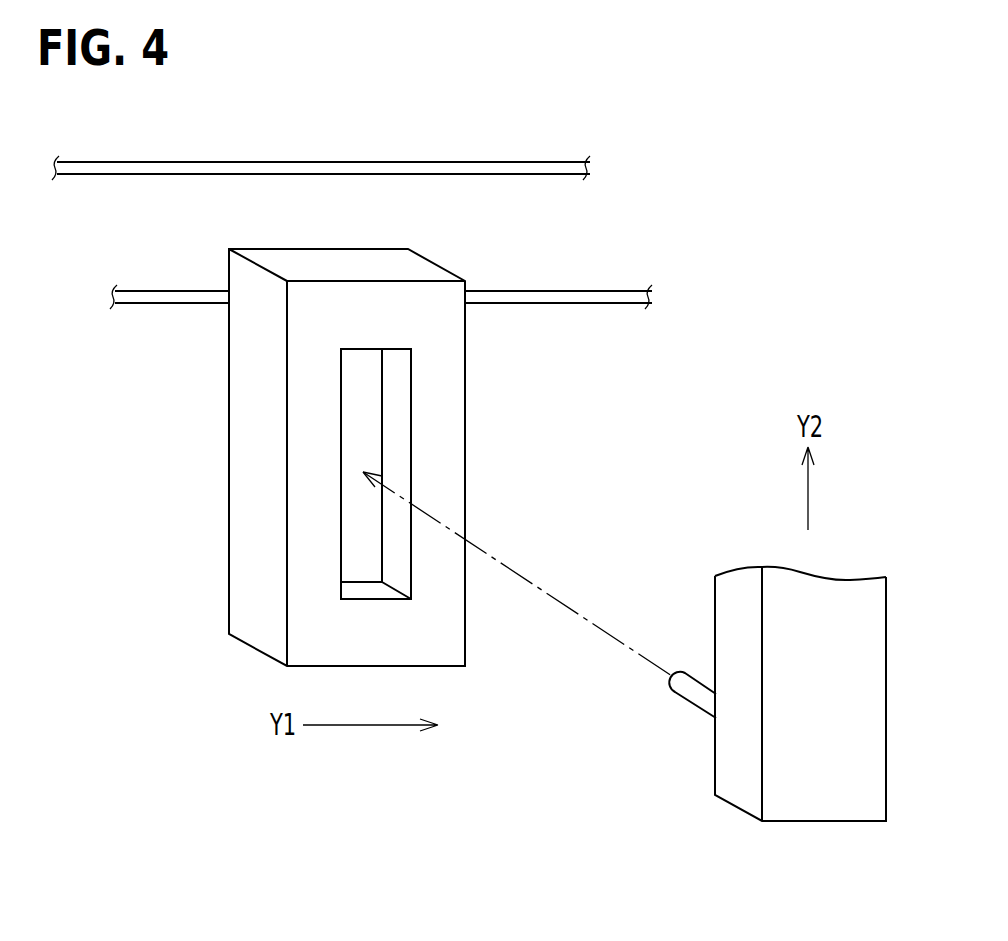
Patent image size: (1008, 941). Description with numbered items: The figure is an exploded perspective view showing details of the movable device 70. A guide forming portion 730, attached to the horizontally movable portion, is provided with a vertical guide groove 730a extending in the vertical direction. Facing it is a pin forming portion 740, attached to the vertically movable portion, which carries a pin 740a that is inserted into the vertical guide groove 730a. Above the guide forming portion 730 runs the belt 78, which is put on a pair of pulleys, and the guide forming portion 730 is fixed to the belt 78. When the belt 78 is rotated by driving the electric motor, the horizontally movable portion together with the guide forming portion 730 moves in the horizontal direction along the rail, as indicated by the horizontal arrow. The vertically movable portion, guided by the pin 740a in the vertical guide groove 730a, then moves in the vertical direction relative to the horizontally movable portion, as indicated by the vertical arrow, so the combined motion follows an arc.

The belt 78 is at (513, 160).
The movable device 70 is at (355, 513).
The guide forming portion 730 is at (248, 526).
The vertical guide groove 730a is at (396, 410).
The pin forming portion 740 is at (821, 807).
The pin 740a is at (683, 696).